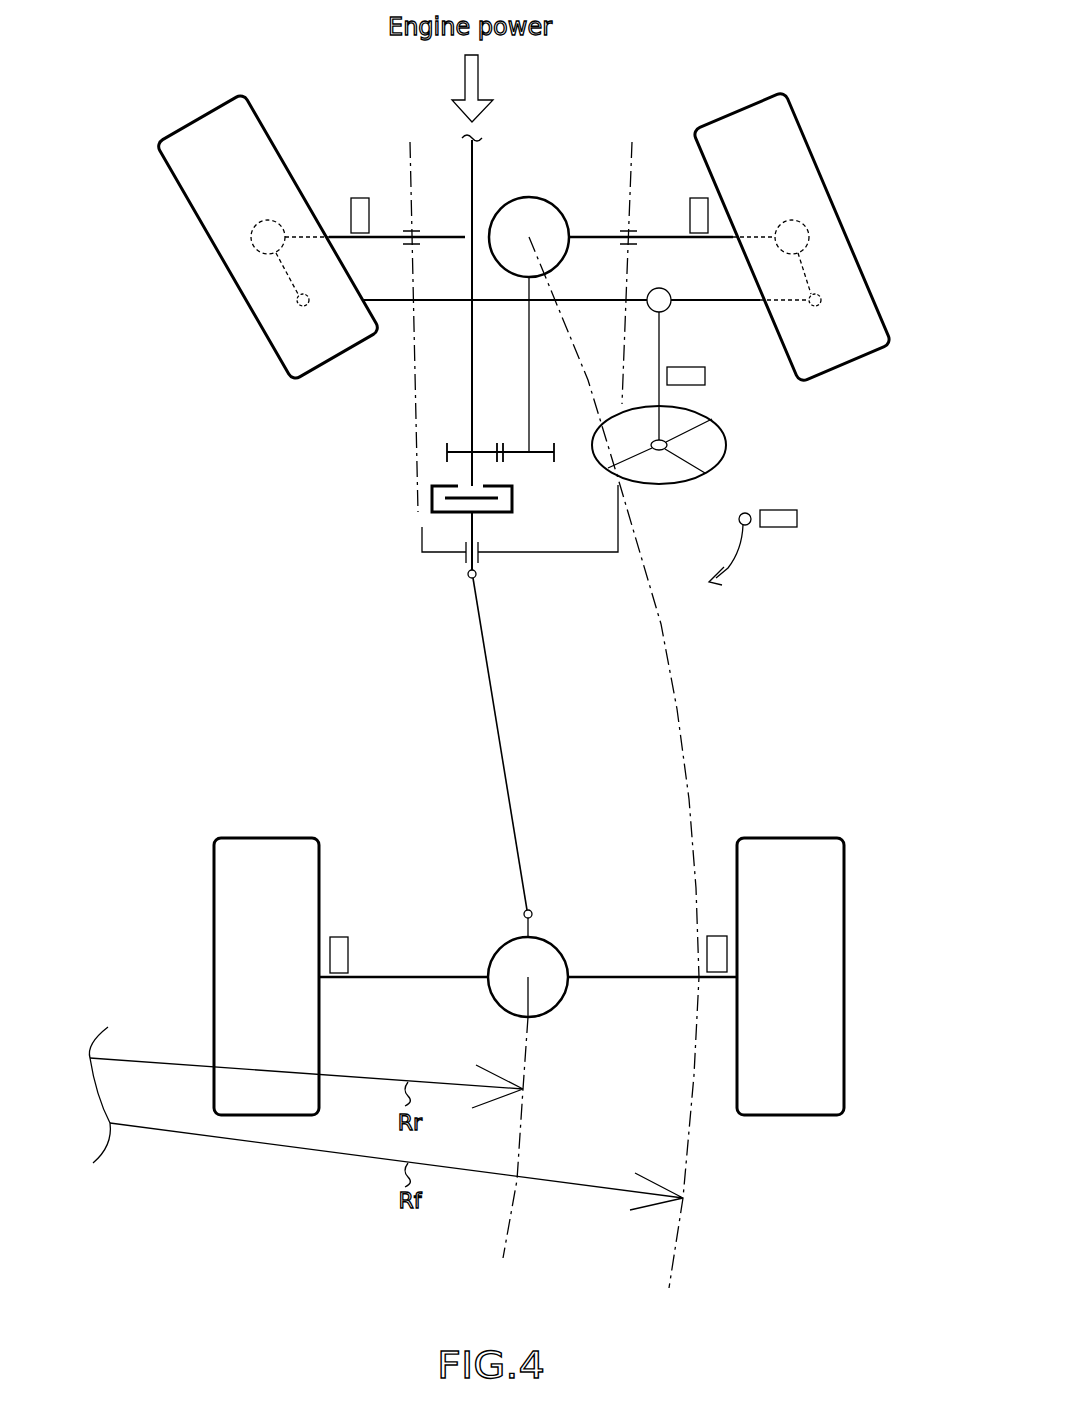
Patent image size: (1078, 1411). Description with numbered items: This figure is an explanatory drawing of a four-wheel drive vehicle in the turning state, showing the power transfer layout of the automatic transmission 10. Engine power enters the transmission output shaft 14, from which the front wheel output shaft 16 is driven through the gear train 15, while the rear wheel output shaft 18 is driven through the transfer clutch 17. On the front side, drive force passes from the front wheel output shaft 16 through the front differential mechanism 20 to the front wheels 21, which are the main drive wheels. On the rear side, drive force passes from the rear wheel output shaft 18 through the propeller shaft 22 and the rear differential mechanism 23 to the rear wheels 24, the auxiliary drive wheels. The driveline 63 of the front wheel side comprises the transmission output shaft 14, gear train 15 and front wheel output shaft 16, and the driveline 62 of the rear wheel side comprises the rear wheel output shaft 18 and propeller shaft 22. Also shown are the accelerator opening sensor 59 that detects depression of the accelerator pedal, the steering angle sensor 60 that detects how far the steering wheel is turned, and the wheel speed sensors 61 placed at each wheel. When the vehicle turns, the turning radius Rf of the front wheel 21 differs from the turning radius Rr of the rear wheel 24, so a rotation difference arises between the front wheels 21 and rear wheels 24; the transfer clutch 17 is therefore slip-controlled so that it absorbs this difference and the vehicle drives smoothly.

The automatic transmission 10 is at (308, 525).
The transmission output shaft 14 is at (471, 381).
The gear train 15 is at (420, 453).
The front wheel output shaft 16 is at (529, 413).
The transfer clutch 17 is at (530, 490).
The rear wheel output shaft 18 is at (470, 532).
The front differential mechanism 20 is at (531, 197).
The front wheel 21 is at (198, 118).
The propeller shaft 22 is at (509, 795).
The rear differential mechanism 23 is at (560, 944).
The rear wheel 24 is at (272, 837).
The accelerator opening sensor 59 is at (797, 517).
The steering angle sensor 60 is at (707, 375).
The wheel speed sensor 61 is at (361, 196).
The driveline of the rear wheel side 62 is at (395, 662).
The driveline of the front wheel side 63 is at (427, 417).